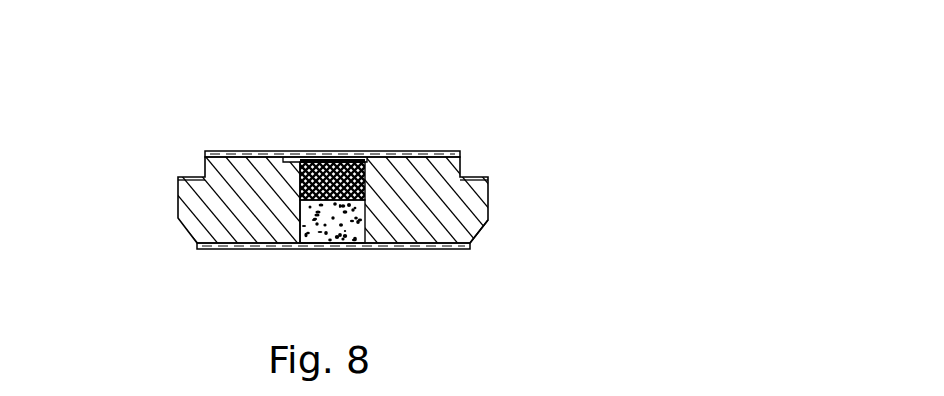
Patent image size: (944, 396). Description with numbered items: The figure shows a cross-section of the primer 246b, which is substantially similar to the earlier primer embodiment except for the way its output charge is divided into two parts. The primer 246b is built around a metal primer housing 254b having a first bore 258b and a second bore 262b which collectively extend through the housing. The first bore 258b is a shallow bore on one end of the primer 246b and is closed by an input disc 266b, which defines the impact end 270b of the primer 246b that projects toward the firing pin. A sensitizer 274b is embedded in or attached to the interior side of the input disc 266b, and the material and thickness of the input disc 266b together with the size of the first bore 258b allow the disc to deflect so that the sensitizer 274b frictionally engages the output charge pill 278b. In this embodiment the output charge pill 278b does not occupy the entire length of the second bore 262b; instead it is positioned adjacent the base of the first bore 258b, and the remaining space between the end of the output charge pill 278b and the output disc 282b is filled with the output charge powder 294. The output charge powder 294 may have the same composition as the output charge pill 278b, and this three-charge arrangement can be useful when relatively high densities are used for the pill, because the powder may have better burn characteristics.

The primer 246b is at (488, 200).
The primer housing 254b is at (485, 228).
The input disc 266b is at (415, 151).
The output disc 282b is at (450, 250).
The output charge pill 278b is at (205, 173).
The first bore 258b is at (283, 161).
The sensitizer 274b is at (290, 152).
The impact end 270b is at (337, 162).
The output charge powder 294 is at (347, 223).
The second bore 262b is at (302, 202).